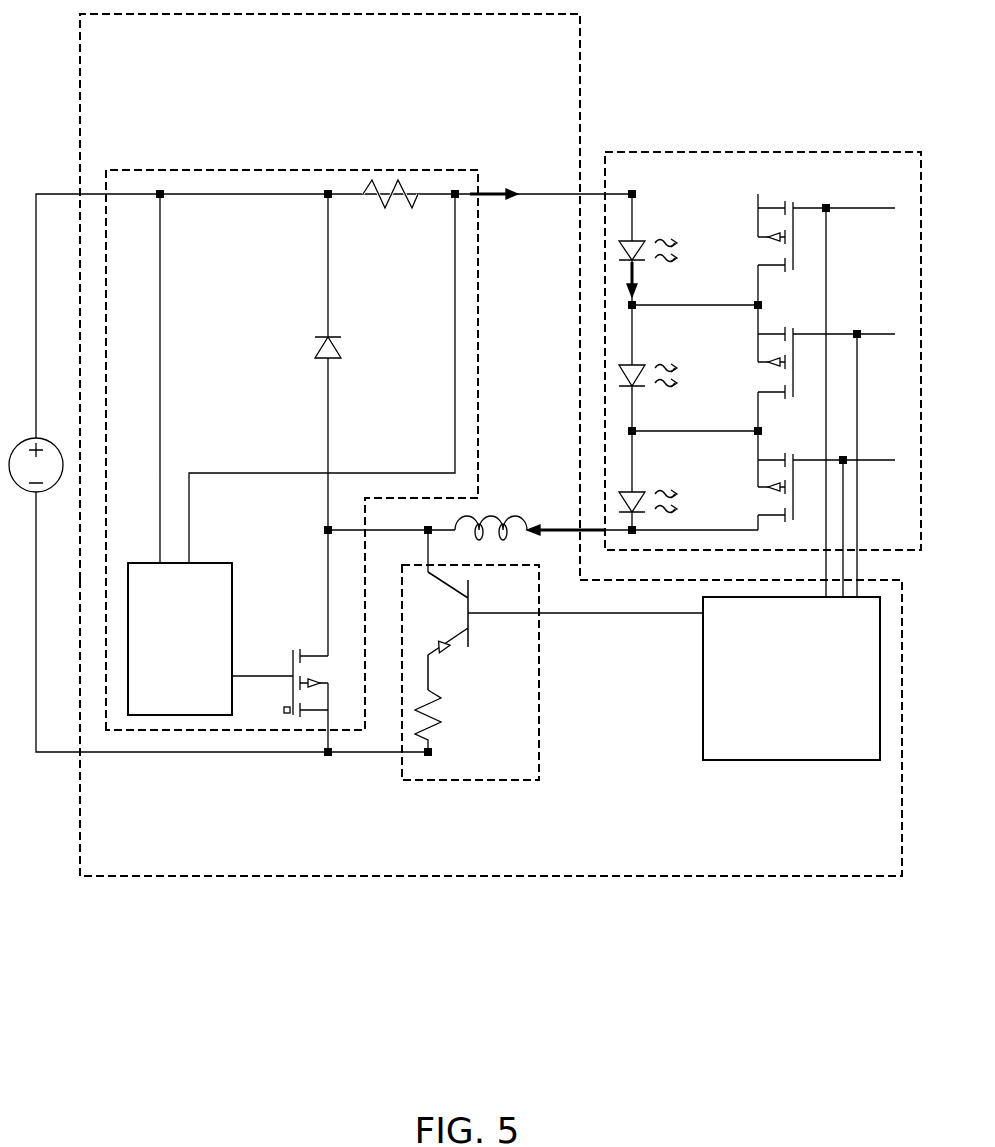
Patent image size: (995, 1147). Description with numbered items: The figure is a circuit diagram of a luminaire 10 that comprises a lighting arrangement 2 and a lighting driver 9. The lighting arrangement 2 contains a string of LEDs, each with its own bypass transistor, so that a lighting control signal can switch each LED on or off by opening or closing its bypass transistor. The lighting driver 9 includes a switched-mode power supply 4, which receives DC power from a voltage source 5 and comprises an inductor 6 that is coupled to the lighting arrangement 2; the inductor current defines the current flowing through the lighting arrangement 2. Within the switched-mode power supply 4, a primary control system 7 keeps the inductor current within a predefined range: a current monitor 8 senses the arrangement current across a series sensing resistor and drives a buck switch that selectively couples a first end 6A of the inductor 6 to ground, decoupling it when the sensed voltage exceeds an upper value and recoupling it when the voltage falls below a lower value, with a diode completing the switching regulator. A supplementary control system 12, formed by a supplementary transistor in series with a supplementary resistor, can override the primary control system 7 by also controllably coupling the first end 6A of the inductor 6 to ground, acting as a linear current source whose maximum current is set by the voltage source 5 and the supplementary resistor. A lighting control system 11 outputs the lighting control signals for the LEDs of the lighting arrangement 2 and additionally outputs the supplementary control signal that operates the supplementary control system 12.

The lighting arrangement 2 is at (733, 152).
The switched-mode power supply 4 is at (220, 102).
The voltage source 5 is at (40, 438).
The inductor 6 is at (497, 495).
The first end of the inductor 6A is at (428, 508).
The primary control system 7 is at (292, 495).
The current monitor 8 is at (180, 639).
The lighting driver 9 is at (598, 878).
The luminaire 10 is at (465, 541).
The lighting control system 11 is at (791, 484).
The supplementary control system 12 is at (495, 782).